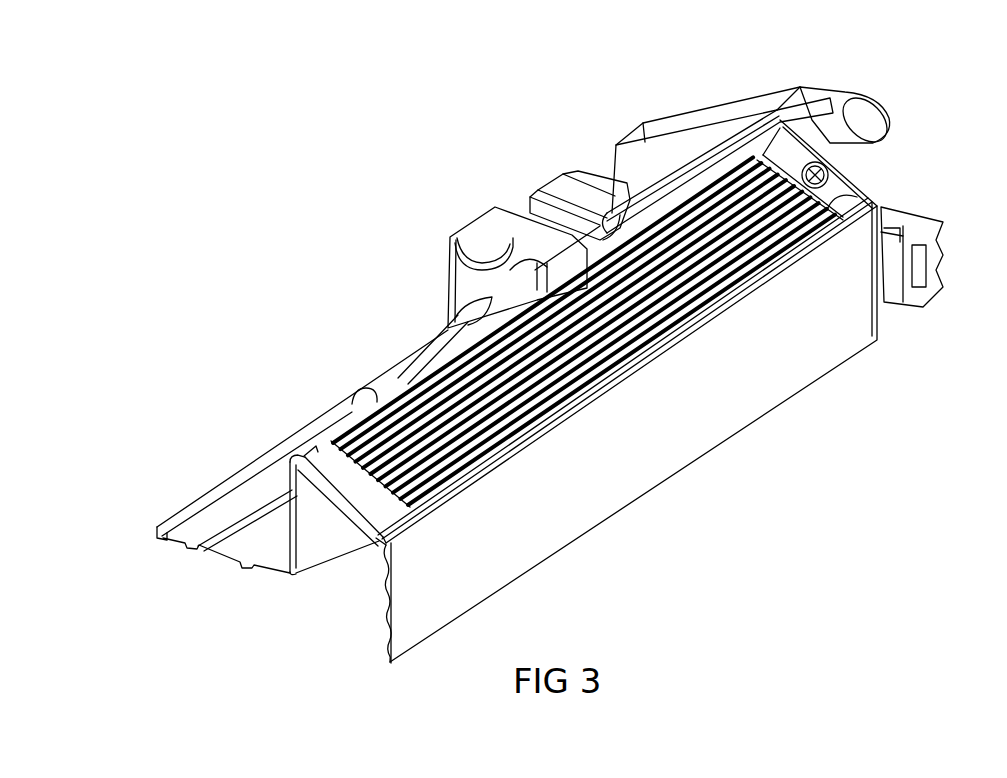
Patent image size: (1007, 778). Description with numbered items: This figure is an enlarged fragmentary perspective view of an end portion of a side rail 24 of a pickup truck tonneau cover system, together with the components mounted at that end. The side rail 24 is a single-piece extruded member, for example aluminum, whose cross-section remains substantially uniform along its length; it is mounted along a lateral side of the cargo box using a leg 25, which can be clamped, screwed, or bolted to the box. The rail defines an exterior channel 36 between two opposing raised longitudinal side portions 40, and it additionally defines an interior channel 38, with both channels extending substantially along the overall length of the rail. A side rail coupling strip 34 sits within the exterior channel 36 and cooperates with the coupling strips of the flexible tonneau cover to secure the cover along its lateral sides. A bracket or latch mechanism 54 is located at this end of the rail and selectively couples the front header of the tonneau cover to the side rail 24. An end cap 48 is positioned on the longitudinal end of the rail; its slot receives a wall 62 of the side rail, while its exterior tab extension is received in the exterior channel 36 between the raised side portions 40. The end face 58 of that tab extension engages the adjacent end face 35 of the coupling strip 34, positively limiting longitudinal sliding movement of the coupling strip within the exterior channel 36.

The side rail 24 is at (717, 460).
The leg 25 is at (381, 637).
The side rail coupling strip 34 is at (407, 433).
The end face of the side rail coupling strip 35 is at (822, 150).
The exterior channel 36 is at (330, 458).
The interior channel 38 is at (342, 628).
The raised longitudinal side portions 40 is at (315, 447).
The end cap 48 is at (927, 223).
The bracket or latch mechanism 54 is at (560, 188).
The end face of the exterior tab extension 58 is at (843, 194).
The wall of the side rail 62 is at (380, 540).